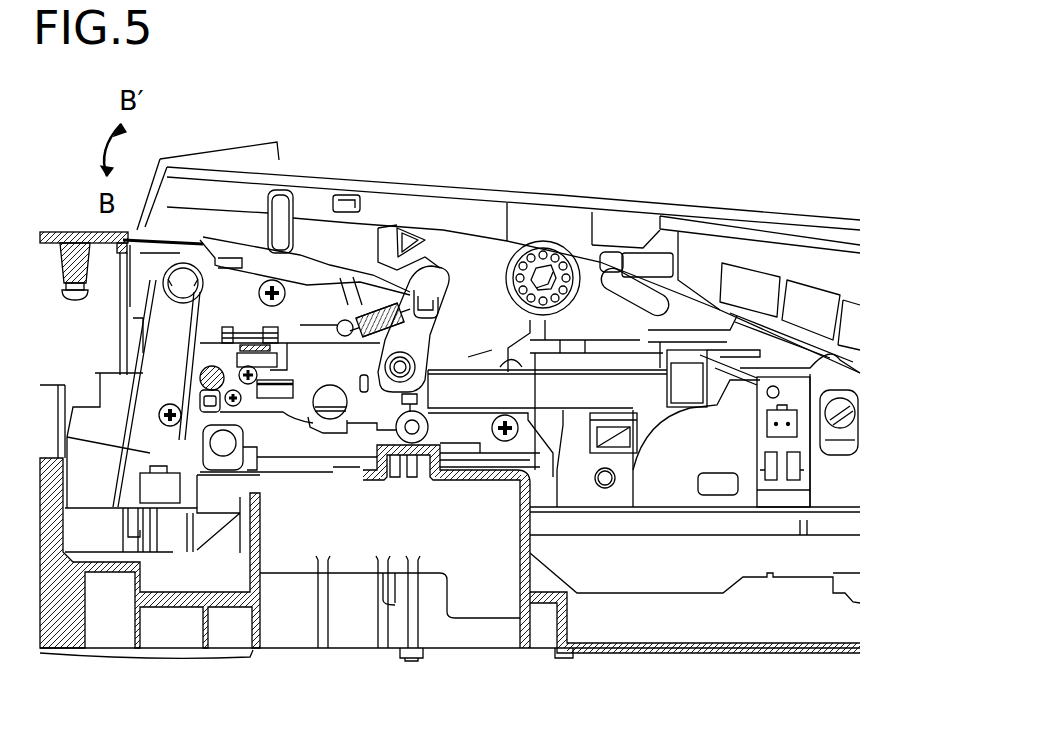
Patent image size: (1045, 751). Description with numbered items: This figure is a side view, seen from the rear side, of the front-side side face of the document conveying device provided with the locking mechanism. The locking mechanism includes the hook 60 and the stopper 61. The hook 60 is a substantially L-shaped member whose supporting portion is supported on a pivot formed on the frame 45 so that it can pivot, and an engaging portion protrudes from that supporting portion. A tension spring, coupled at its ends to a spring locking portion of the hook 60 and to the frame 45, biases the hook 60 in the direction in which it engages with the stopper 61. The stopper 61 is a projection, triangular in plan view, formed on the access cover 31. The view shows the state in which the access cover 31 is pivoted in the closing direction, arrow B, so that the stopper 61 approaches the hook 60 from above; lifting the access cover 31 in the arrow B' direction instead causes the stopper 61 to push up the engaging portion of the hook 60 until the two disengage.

The access cover 31 is at (829, 222).
The frame 45 is at (848, 469).
The hook 60 is at (438, 277).
The stopper 61 is at (393, 233).